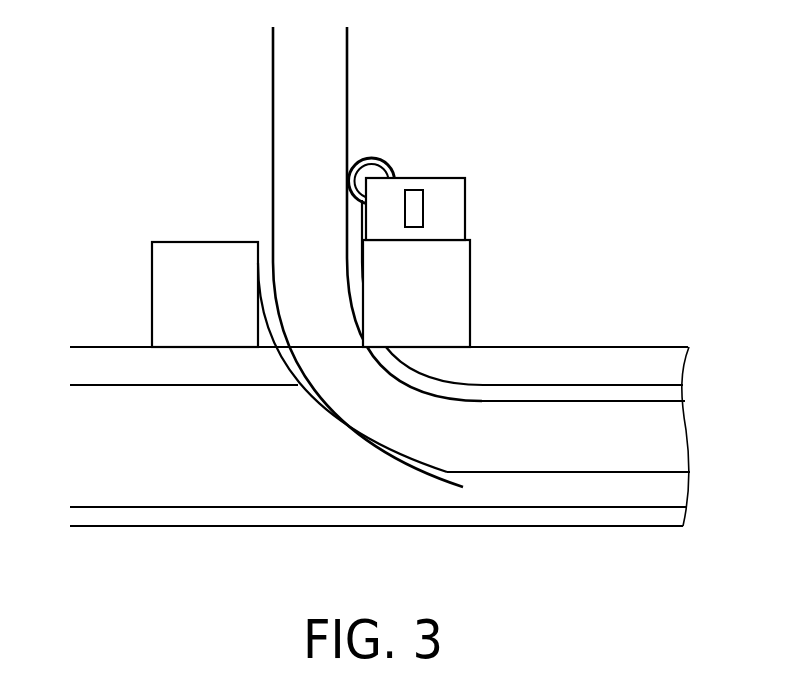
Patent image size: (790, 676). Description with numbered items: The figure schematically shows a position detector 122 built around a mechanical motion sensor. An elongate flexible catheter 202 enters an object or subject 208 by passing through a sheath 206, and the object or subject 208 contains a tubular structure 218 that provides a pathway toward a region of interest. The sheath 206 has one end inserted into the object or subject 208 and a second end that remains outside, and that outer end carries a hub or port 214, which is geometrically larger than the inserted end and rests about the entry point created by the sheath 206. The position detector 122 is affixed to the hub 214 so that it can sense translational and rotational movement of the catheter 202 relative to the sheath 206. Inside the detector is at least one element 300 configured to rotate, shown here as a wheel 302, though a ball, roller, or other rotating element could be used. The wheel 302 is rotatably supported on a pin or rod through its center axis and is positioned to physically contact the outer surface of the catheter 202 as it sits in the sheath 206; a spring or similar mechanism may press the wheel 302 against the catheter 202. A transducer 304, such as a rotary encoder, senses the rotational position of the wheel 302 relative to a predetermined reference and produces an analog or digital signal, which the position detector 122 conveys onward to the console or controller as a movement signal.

The position detector 122 is at (466, 218).
The elongate flexible catheter 202 is at (273, 50).
The sheath 206 is at (350, 443).
The object or subject 208 is at (228, 527).
The hub or port 214 is at (152, 280).
The tubular structure 218 is at (150, 505).
The rotating element 300 is at (368, 133).
The wheel 302 is at (395, 168).
The transducer 304 is at (423, 195).